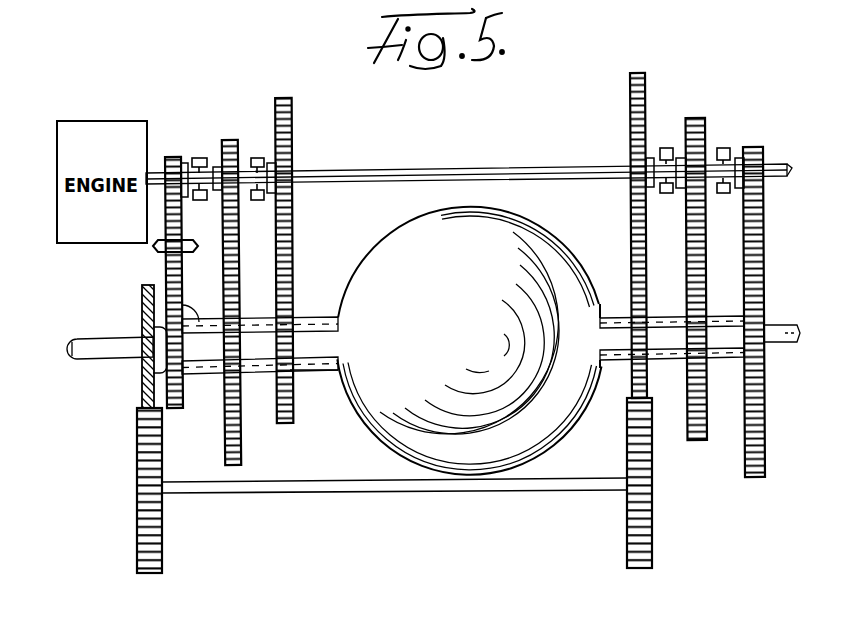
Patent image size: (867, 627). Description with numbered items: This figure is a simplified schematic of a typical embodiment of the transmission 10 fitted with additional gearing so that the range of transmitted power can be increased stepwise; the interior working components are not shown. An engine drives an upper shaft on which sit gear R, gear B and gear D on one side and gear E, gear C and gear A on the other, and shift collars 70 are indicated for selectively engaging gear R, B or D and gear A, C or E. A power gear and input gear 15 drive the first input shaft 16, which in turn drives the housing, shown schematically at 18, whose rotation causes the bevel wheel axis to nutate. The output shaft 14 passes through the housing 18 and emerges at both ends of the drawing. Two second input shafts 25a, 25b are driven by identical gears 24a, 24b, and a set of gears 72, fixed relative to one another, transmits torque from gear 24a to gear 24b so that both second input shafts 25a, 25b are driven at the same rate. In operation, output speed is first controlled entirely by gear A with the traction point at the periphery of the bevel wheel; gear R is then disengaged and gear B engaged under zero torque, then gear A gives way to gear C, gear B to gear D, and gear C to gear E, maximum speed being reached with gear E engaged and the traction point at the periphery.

The disc 10 is at (543, 216).
The output shaft 14 is at (108, 359).
The input gear 15 is at (205, 447).
The first input shaft 16 is at (328, 364).
The housing 18 is at (490, 294).
The gear 24a is at (731, 466).
The gear 24b is at (140, 287).
The second input shaft 25a is at (675, 352).
The second input shaft 25b is at (138, 310).
The shift collars 70 is at (257, 157).
The set of gears 72 is at (162, 548).
The gear R is at (176, 266).
The gear B is at (227, 288).
The gear D is at (279, 245).
The gear E is at (640, 221).
The gear C is at (691, 264).
The gear A is at (750, 297).